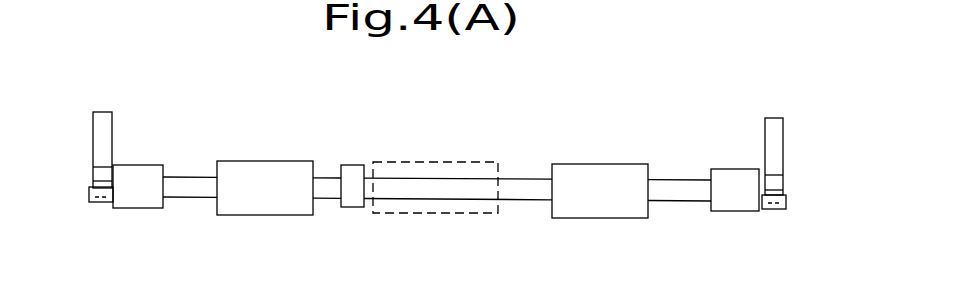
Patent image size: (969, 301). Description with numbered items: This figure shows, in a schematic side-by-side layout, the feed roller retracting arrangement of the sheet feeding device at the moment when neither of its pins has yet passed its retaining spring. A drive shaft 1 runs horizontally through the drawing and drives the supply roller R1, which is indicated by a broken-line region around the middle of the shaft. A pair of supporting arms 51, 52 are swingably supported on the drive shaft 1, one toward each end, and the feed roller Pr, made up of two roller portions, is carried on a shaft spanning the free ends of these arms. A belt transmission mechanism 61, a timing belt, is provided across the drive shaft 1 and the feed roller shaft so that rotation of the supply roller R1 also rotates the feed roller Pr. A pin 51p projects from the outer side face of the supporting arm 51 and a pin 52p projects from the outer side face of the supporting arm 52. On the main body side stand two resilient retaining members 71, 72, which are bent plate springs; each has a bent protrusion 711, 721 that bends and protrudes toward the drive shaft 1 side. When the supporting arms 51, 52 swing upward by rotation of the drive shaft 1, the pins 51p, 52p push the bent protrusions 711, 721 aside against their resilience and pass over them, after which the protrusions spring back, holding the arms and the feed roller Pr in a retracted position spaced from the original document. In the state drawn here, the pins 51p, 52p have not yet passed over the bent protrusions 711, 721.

The drive shaft 1 is at (527, 188).
The supporting arm 51 is at (147, 165).
The pin 51p is at (98, 202).
The supporting arm 52 is at (728, 169).
The pin 52p is at (775, 209).
The belt transmission mechanism 61 is at (350, 165).
The resilient retaining member 71 is at (103, 112).
The bent protrusion 711 is at (95, 178).
The resilient retaining member 72 is at (772, 118).
The bent protrusion 721 is at (773, 183).
The supply roller R1 is at (430, 162).
The feed roller Pr is at (269, 161).